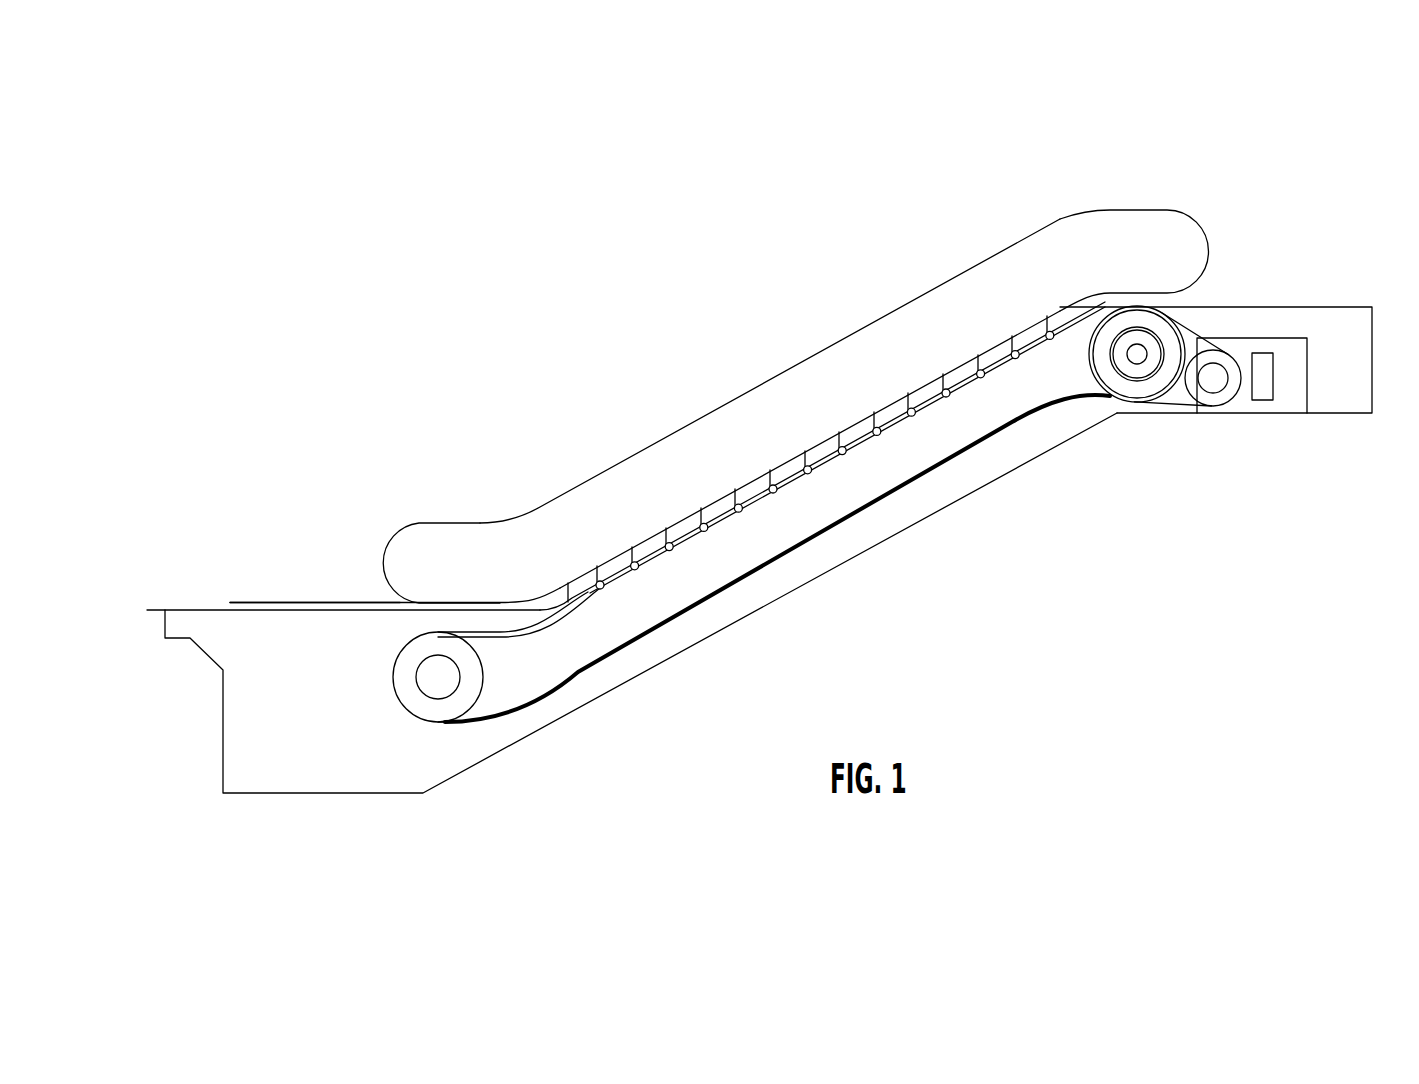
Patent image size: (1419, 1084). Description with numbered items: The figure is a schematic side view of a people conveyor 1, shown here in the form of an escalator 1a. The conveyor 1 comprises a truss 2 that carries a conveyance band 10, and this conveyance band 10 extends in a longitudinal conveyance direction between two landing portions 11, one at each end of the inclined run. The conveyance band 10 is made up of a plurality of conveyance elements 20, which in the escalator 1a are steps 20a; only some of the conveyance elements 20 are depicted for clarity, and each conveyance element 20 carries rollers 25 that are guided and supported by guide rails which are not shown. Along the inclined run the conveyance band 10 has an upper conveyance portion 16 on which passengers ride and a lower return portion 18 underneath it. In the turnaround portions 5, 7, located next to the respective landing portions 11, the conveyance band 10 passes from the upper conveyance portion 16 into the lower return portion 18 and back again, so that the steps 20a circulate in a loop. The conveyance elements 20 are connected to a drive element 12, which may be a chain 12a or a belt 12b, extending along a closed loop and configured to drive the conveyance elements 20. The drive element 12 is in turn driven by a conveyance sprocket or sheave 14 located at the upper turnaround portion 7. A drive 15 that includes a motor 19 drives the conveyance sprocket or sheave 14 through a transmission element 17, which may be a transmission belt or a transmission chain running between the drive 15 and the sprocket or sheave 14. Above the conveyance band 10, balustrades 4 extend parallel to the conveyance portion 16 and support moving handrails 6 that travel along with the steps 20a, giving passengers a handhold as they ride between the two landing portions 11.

The conveyor 1 is at (402, 414).
The escalator 1a is at (573, 263).
The truss 2 is at (286, 812).
The balustrades 4 is at (458, 548).
The turnaround portion 5 is at (378, 716).
The moving handrails 6 is at (632, 457).
The turnaround portion 7 is at (1225, 283).
The conveyance band 10 is at (774, 557).
The landing portions 11 is at (340, 570).
The drive element 12 is at (519, 700).
The chain 12a is at (519, 700).
The belt 12b is at (476, 722).
The conveyance sprocket or sheave 14 is at (1075, 362).
The drive 15 is at (1271, 398).
The conveyance portion 16 is at (830, 406).
The transmission element 17 is at (1216, 365).
The return portion 18 is at (621, 670).
The motor 19 is at (1263, 392).
The conveyance elements 20 is at (792, 456).
The steps 20a is at (583, 584).
The rollers 25 is at (636, 572).